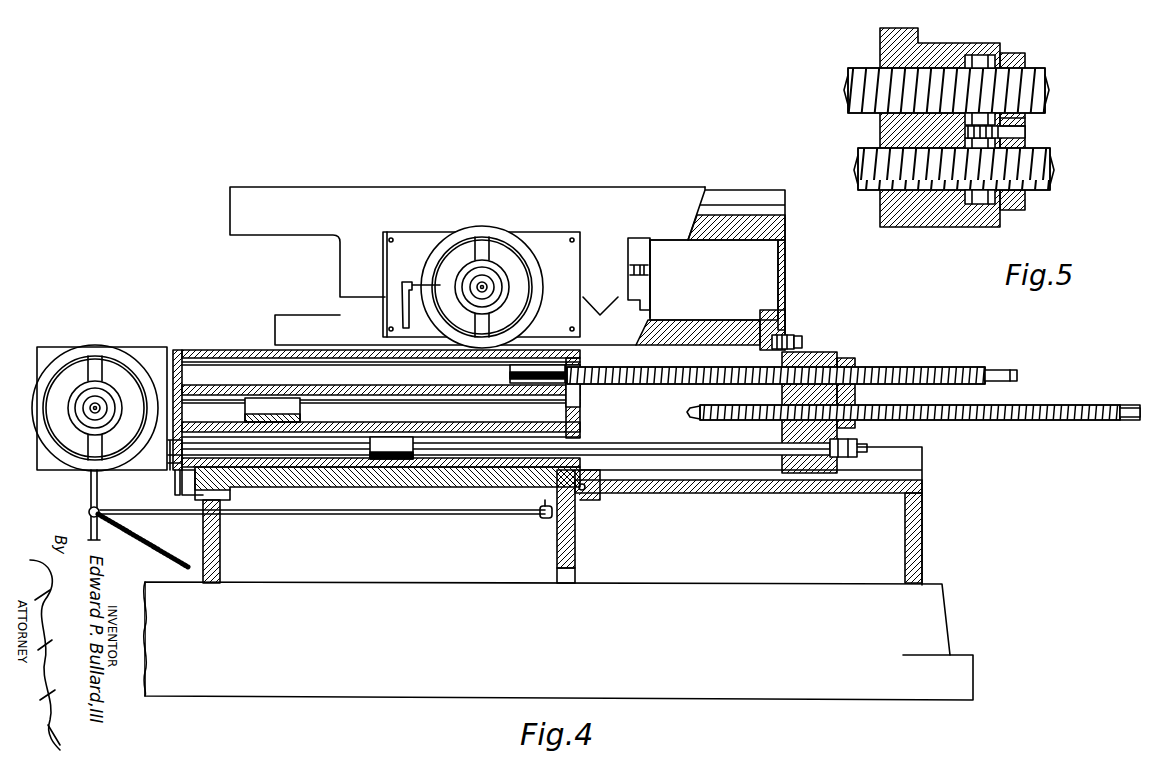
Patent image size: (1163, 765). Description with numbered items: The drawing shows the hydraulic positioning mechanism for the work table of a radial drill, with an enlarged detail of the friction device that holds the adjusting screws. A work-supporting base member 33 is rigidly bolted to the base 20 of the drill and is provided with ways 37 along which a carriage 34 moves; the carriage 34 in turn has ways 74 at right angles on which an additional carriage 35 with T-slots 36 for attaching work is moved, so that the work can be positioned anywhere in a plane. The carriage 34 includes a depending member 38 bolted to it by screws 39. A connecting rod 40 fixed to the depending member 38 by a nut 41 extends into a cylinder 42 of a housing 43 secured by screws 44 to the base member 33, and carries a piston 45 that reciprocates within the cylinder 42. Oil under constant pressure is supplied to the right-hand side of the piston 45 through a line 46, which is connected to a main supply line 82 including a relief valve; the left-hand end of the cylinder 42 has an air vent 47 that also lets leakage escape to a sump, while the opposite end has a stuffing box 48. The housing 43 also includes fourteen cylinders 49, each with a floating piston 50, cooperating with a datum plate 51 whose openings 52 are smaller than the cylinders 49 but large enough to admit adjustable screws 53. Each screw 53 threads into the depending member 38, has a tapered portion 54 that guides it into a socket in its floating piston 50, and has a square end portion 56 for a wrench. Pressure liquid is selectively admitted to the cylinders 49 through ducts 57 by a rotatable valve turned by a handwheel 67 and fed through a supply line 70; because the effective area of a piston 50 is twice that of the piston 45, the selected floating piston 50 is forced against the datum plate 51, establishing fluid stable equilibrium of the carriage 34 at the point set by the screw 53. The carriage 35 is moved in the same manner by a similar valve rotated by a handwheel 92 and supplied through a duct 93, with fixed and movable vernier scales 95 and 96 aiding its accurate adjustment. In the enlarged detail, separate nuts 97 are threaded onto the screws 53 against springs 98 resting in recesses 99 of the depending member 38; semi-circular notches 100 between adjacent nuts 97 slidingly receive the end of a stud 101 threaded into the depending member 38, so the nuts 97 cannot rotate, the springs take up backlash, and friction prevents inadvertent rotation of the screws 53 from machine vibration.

In FIG. 4, the base 20 is at (968, 660).
In FIG. 4, the base member 33 is at (922, 548).
In FIG. 4, the carriage 34 is at (785, 325).
In FIG. 4, the carriage 35 is at (643, 187).
In FIG. 4, the T-slots 36 is at (710, 208).
In FIG. 4, the ways 37 is at (922, 450).
In FIG. 4, the depending member 38 is at (840, 355).
In FIG. 5, the depending member 38 is at (945, 46).
In FIG. 4, the screws 39 is at (802, 340).
In FIG. 4, the connecting rod 40 is at (640, 445).
In FIG. 4, the nut 41 is at (857, 440).
In FIG. 4, the cylinder 42 is at (346, 475).
In FIG. 4, the housing 43 is at (303, 472).
In FIG. 4, the screws 44 is at (228, 490).
In FIG. 4, the piston 45 is at (394, 465).
In FIG. 4, the line 46 is at (462, 512).
In FIG. 4, the air vent 47 is at (182, 448).
In FIG. 4, the stuffing box 48 is at (595, 493).
In FIG. 4, the cylinders 49 is at (244, 360).
In FIG. 4, the floating piston 50 is at (288, 400).
In FIG. 4, the datum plate 51 is at (585, 396).
In FIG. 4, the openings 52 is at (565, 403).
In FIG. 4, the adjustable screws 53 is at (770, 402).
In FIG. 5, the adjustable screws 53 is at (857, 158).
In FIG. 4, the tapered portion 54 is at (690, 414).
In FIG. 4, the square end portion 56 is at (1008, 368).
In FIG. 4, the ducts 57 is at (180, 374).
In FIG. 4, the handwheel 67 is at (95, 350).
In FIG. 4, the supply line 70 is at (90, 494).
In FIG. 4, the ways 74 is at (345, 297).
In FIG. 4, the main supply line 82 is at (100, 540).
In FIG. 4, the handwheel 92 is at (487, 228).
In FIG. 4, the duct 93 is at (436, 281).
In FIG. 4, the fixed vernier scale 95 is at (787, 247).
In FIG. 4, the movable vernier scale 96 is at (786, 215).
In FIG. 5, the nuts 97 is at (1026, 58).
In FIG. 5, the springs 98 is at (998, 54).
In FIG. 5, the recesses 99 is at (975, 58).
In FIG. 5, the semi-circular notches 100 is at (1028, 132).
In FIG. 5, the stud 101 is at (1028, 119).